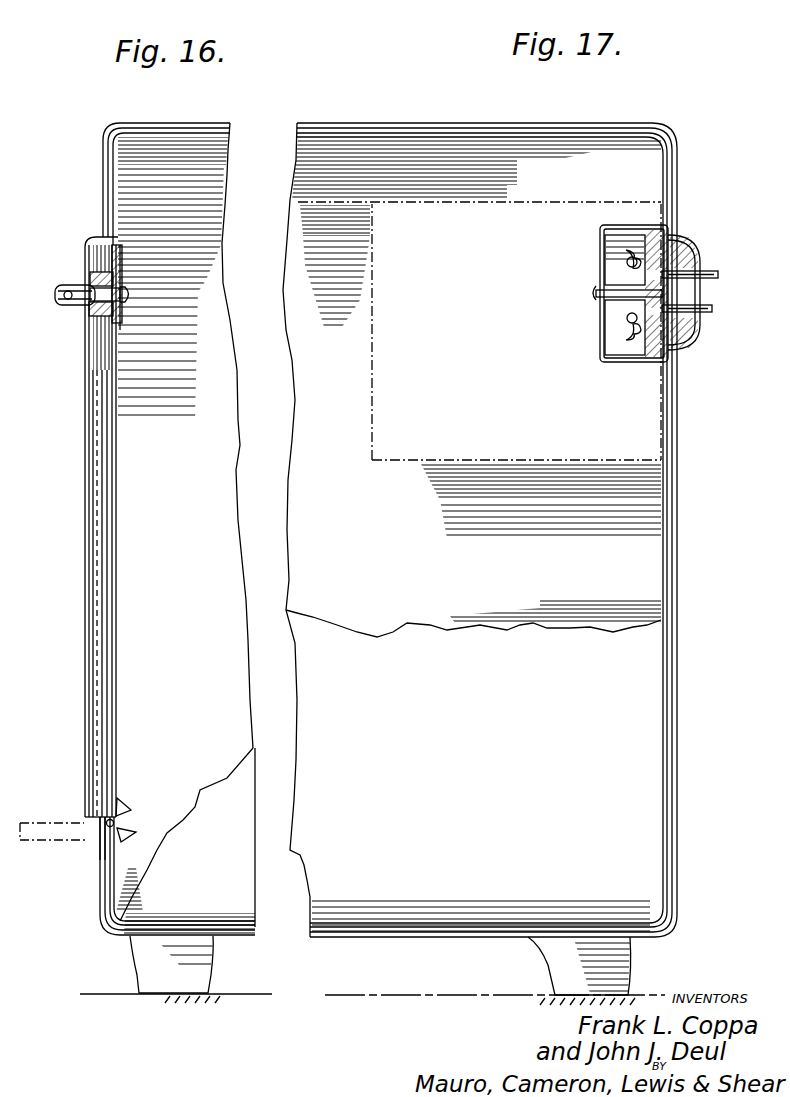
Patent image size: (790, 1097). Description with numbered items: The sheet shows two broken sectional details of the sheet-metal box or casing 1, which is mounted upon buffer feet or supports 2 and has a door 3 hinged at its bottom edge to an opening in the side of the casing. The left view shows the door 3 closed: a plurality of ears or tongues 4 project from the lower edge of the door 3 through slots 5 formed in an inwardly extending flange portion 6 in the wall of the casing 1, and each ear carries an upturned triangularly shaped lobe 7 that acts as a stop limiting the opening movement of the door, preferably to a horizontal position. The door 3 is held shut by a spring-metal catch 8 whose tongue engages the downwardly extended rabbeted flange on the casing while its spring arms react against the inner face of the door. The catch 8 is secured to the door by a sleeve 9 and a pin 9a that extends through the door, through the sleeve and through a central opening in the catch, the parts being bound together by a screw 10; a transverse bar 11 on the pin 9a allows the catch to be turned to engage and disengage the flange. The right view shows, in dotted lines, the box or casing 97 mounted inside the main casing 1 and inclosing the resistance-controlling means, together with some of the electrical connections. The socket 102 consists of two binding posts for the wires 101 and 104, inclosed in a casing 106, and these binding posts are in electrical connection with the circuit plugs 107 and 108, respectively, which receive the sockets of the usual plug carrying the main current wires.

In FIG. 16, the box or casing 1 is at (103, 170).
In FIG. 17, the box or casing 1 is at (670, 790).
In FIG. 16, the buffer feet or supports 2 is at (212, 961).
In FIG. 17, the buffer feet or supports 2 is at (632, 958).
In FIG. 16, the door 3 is at (84, 506).
In FIG. 16, the ears or tongues 4 is at (101, 846).
In FIG. 16, the slots 5 is at (122, 832).
In FIG. 16, the inwardly extending flange portion 6 is at (113, 806).
In FIG. 16, the upturned triangularly shaped lobe 7 is at (128, 836).
In FIG. 16, the catch 8 is at (124, 262).
In FIG. 16, the sleeve 9 is at (114, 332).
In FIG. 16, the pin 9a is at (63, 285).
In FIG. 16, the screw 10 is at (129, 302).
In FIG. 16, the transverse bar 11 is at (60, 306).
In FIG. 17, the box or casing 97 is at (424, 460).
In FIG. 17, the wire 101 is at (626, 350).
In FIG. 17, the socket 102 is at (654, 230).
In FIG. 17, the wire 104 is at (628, 226).
In FIG. 17, the casing 106 is at (603, 251).
In FIG. 17, the circuit plug 107 is at (704, 318).
In FIG. 17, the circuit plug 108 is at (712, 275).